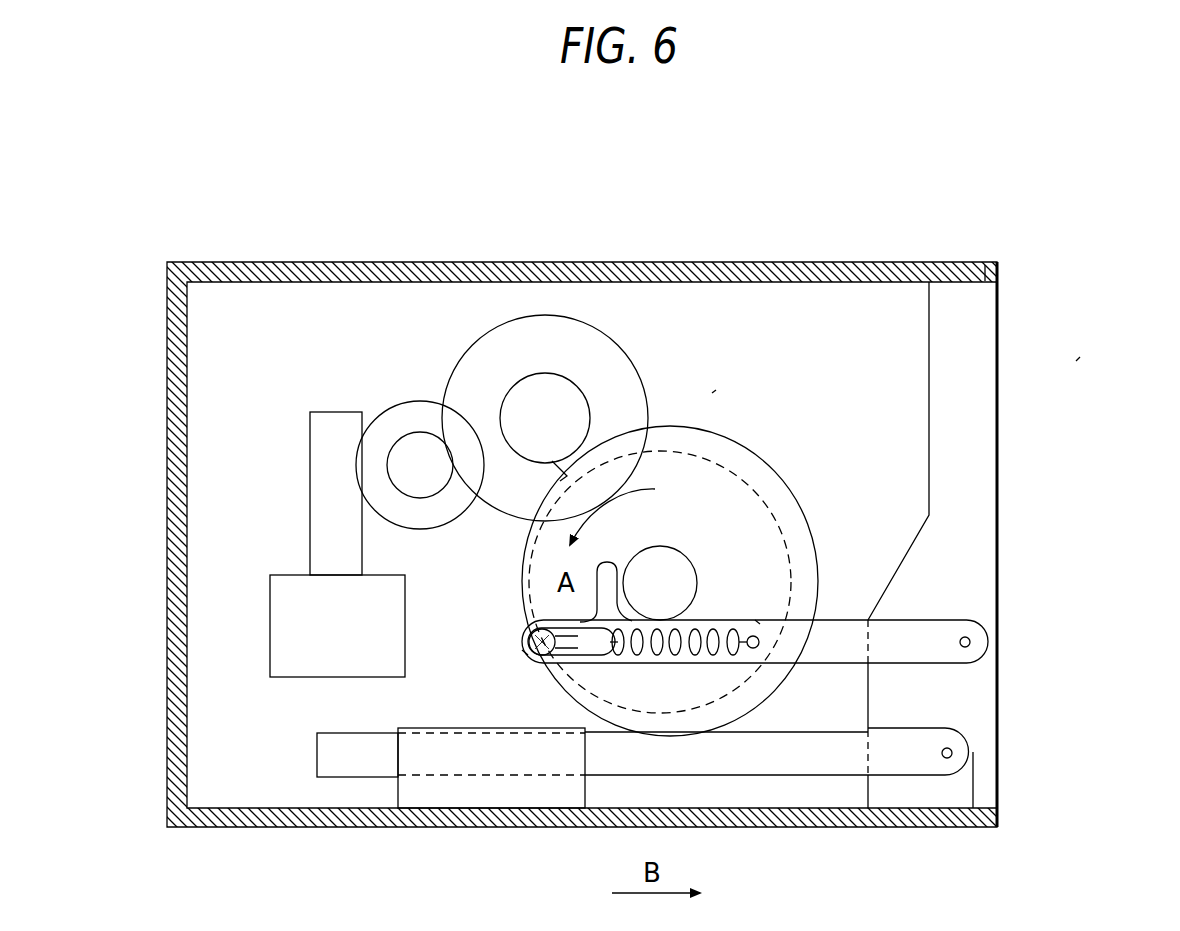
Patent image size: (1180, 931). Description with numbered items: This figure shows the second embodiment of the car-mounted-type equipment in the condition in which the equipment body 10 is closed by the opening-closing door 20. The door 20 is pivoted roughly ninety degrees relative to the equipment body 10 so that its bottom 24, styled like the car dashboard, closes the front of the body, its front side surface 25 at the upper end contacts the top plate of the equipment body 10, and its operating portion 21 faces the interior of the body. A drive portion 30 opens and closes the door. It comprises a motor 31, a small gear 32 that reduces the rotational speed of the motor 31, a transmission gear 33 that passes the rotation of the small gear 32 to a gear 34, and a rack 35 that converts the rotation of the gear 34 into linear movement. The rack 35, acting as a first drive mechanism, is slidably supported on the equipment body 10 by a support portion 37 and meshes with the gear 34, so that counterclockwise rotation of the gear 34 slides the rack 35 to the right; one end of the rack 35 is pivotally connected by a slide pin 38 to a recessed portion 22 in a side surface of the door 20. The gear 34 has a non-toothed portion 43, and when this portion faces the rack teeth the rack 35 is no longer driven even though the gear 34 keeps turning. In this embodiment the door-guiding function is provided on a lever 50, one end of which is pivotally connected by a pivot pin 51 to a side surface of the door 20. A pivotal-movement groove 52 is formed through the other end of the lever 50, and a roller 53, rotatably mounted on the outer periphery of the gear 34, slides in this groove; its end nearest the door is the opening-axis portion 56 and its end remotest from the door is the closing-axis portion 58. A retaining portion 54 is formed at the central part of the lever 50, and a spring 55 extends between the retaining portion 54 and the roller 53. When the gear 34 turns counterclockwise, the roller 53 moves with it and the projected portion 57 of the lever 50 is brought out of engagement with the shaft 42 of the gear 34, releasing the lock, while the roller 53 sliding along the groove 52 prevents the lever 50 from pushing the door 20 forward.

The equipment body 10 is at (562, 262).
The opening-closing door 20 is at (1080, 356).
The operating portion 21 is at (928, 405).
The recessed portion 22 is at (916, 790).
The bottom 24 is at (1000, 422).
The front side surface 25 is at (970, 282).
The drive portion 30 is at (710, 392).
The motor 31 is at (270, 600).
The small gear 32 is at (418, 402).
The transmission gear 33 is at (640, 368).
The gear 34 is at (790, 488).
The rack 35 is at (740, 790).
The support portion 37 is at (563, 790).
The slide pin 38 is at (952, 760).
The shaft 42 is at (697, 573).
The non-toothed portion 43 is at (523, 552).
The lever 50 is at (820, 657).
The pivot pin 51 is at (985, 620).
The pivotal-movement groove 52 is at (530, 626).
The roller 53 is at (528, 655).
The retaining portion 54 is at (755, 620).
The spring 55 is at (732, 622).
The opening-axis portion 56 is at (650, 660).
The projected portion 57 is at (620, 560).
The closing-axis portion 58 is at (528, 634).